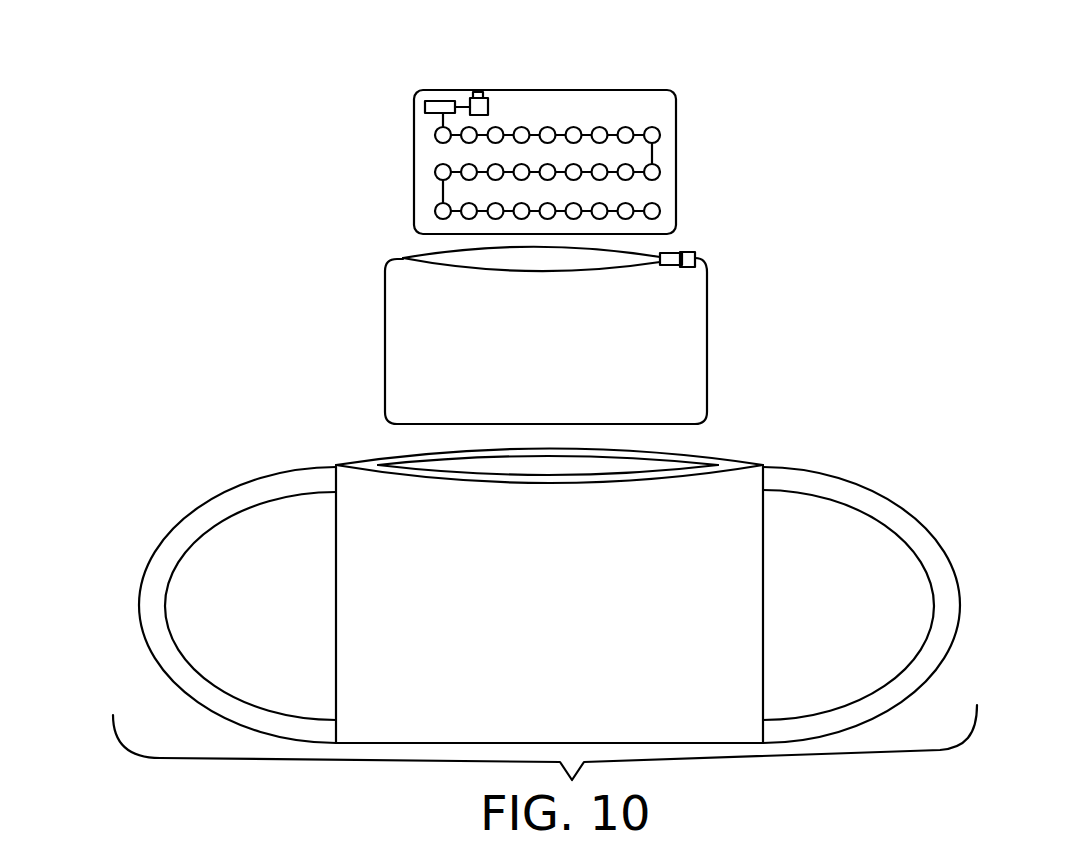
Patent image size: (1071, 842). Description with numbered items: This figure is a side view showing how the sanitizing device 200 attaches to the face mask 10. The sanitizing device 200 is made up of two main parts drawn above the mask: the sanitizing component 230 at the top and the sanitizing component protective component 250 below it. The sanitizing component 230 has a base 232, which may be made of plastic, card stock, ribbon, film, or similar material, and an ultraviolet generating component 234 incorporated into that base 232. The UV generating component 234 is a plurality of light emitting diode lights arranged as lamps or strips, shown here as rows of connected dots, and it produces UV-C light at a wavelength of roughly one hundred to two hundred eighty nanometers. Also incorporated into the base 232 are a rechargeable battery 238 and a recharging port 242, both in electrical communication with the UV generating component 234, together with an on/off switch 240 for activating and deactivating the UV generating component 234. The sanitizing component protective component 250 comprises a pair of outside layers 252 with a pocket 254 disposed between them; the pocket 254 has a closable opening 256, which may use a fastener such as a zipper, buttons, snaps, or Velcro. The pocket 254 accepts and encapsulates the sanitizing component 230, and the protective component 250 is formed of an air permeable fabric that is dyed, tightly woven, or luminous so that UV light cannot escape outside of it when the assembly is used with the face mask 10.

The face mask 10 is at (182, 445).
The sanitizing device 200 is at (830, 197).
The sanitizing component 230 is at (584, 130).
The base 232 is at (427, 155).
The ultraviolet (UV) generating component 234 is at (442, 211).
The rechargeable battery 238 is at (474, 103).
The on/off switch 240 is at (440, 105).
The recharging port 242 is at (479, 94).
The sanitizing component protective component 250 is at (588, 313).
The pair of outside layers 252 is at (645, 251).
The pocket 254 is at (463, 260).
The closable opening 256 is at (622, 246).